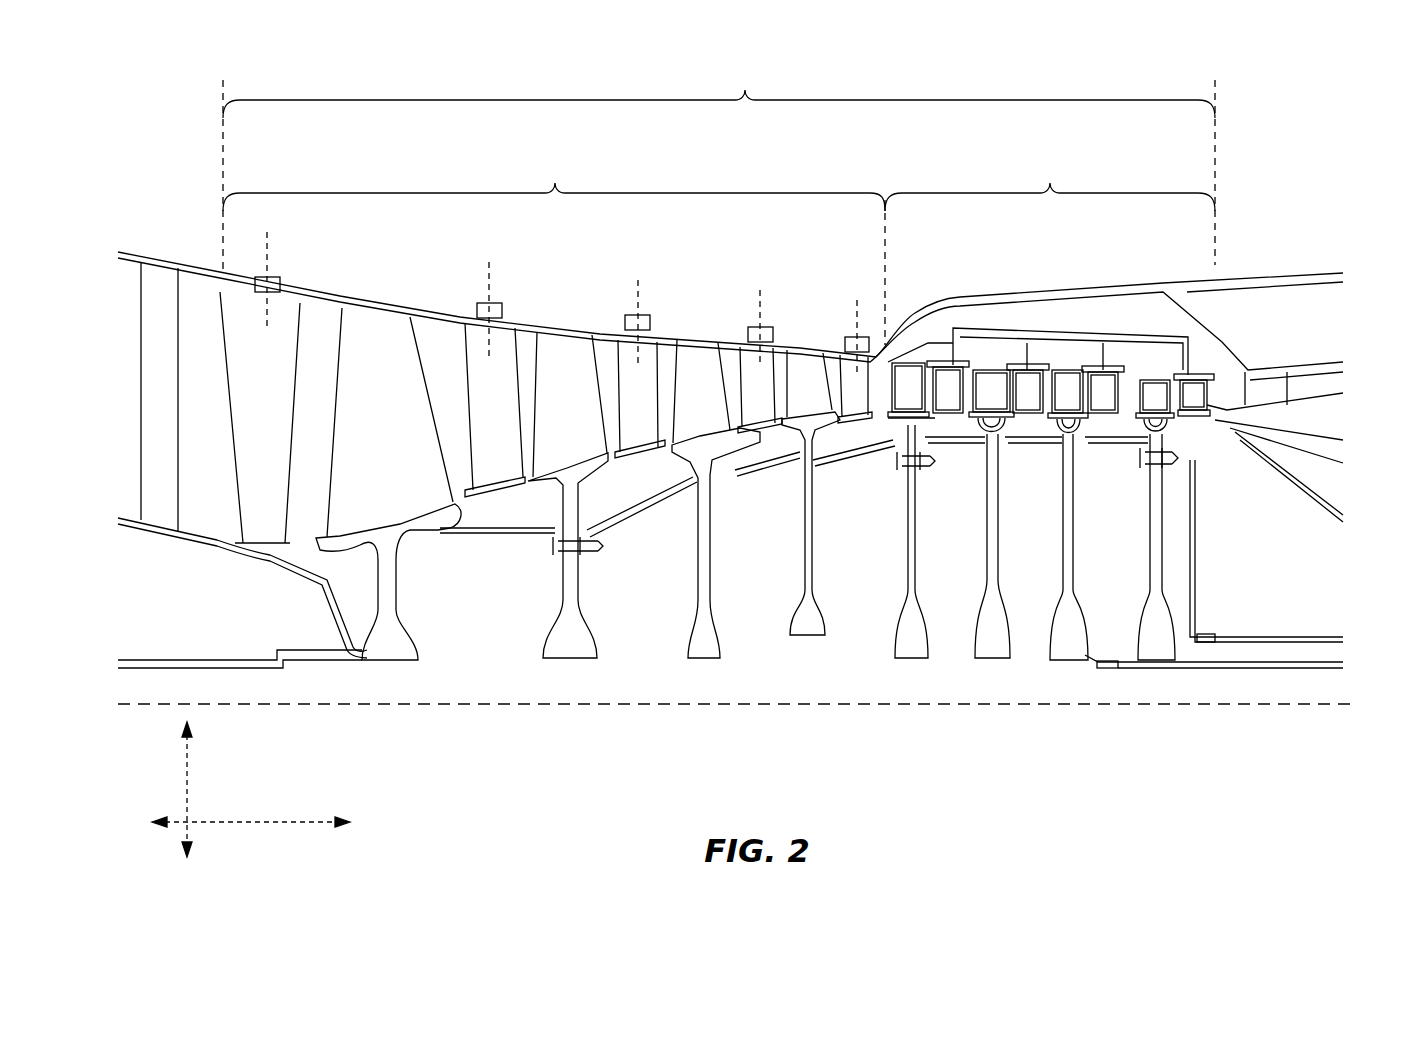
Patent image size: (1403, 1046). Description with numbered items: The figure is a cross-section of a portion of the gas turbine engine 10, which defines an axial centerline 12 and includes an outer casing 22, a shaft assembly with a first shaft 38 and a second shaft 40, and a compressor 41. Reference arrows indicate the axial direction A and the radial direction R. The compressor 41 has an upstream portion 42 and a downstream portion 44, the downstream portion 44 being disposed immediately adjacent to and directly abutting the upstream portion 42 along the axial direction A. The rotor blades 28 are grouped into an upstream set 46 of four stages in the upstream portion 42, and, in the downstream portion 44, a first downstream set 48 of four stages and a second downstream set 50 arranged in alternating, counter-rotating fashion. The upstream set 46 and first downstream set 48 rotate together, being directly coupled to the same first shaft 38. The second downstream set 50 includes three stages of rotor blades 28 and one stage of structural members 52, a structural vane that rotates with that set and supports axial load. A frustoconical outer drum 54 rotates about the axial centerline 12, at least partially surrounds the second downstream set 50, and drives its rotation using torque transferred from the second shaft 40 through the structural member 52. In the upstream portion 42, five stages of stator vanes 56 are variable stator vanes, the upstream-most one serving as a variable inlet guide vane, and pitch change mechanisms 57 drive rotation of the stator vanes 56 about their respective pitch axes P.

The gas turbine engine 10 is at (1282, 207).
The axial centerline 12 is at (572, 707).
The outer casing 22 is at (160, 264).
The rotor blades 28 is at (371, 466).
The first shaft 38 is at (170, 660).
The second shaft 40 is at (1278, 637).
The compressor 41 is at (719, 161).
The upstream portion 42 is at (554, 247).
The downstream portion 44 is at (1050, 180).
The upstream set 46 is at (380, 323).
The first downstream set 48 is at (1155, 378).
The second downstream set 50 is at (1195, 413).
The structural member 52 is at (1181, 408).
The outer drum 54 is at (1180, 340).
The stator vanes 56 is at (252, 466).
The pitch change mechanisms 57 is at (270, 277).
The pitch axes P is at (265, 264).
The radial direction R is at (186, 766).
The axial direction A is at (222, 823).